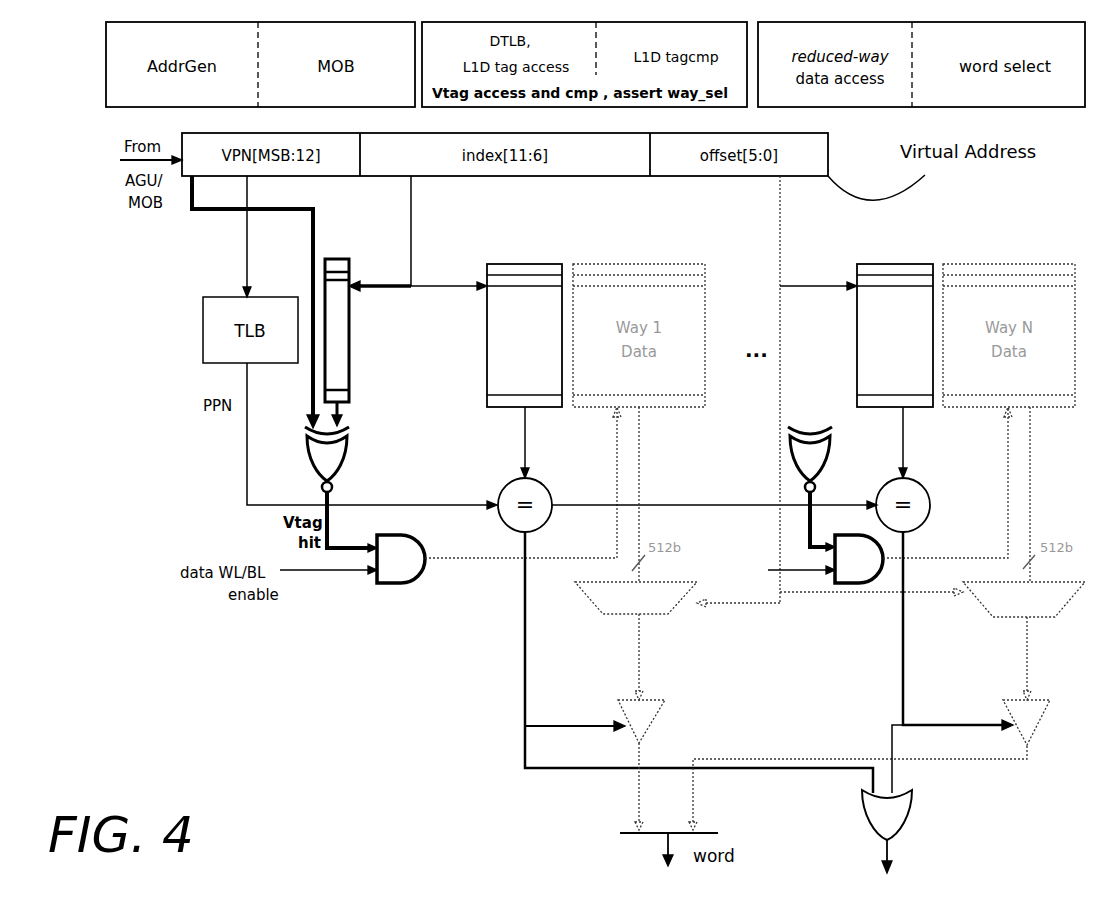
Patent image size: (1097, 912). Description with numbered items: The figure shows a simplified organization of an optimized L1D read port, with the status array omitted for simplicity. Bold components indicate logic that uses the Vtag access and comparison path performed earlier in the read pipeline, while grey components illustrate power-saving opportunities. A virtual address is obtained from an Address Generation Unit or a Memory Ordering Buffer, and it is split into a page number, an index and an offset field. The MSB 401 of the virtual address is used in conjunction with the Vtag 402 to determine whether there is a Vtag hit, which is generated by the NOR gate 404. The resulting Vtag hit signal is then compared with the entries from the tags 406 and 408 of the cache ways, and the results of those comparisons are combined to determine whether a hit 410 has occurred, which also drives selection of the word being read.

The MSB of the virtual address 401 is at (190, 213).
The Vtag 402 is at (365, 329).
The NOR gate 404 is at (327, 455).
The tag 406 is at (524, 335).
The tag 408 is at (895, 335).
The hit 410 is at (909, 831).